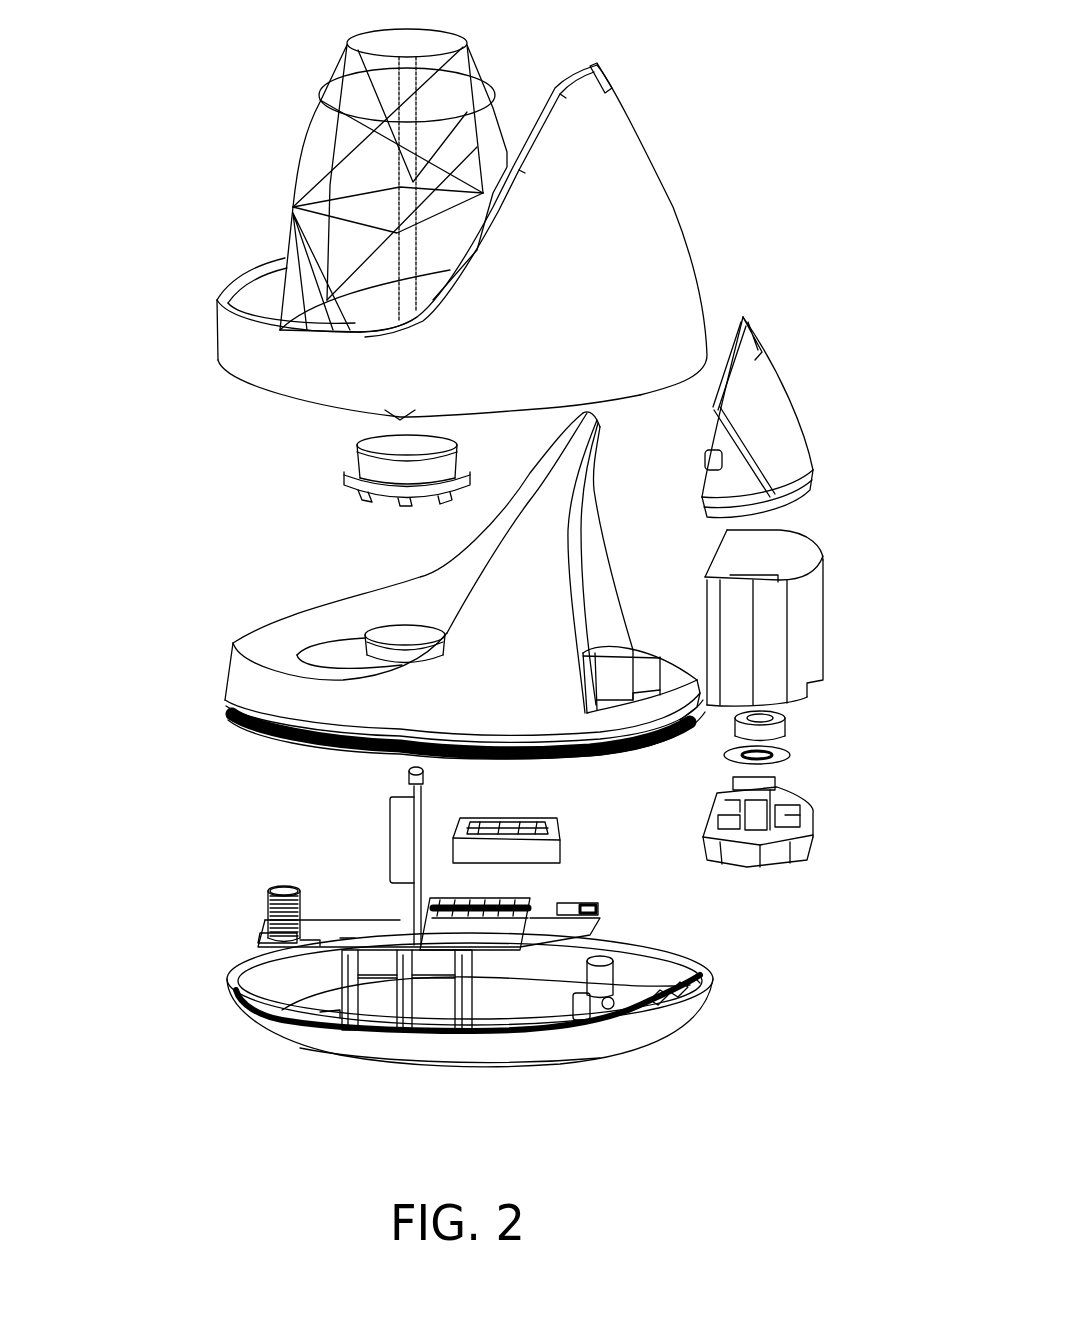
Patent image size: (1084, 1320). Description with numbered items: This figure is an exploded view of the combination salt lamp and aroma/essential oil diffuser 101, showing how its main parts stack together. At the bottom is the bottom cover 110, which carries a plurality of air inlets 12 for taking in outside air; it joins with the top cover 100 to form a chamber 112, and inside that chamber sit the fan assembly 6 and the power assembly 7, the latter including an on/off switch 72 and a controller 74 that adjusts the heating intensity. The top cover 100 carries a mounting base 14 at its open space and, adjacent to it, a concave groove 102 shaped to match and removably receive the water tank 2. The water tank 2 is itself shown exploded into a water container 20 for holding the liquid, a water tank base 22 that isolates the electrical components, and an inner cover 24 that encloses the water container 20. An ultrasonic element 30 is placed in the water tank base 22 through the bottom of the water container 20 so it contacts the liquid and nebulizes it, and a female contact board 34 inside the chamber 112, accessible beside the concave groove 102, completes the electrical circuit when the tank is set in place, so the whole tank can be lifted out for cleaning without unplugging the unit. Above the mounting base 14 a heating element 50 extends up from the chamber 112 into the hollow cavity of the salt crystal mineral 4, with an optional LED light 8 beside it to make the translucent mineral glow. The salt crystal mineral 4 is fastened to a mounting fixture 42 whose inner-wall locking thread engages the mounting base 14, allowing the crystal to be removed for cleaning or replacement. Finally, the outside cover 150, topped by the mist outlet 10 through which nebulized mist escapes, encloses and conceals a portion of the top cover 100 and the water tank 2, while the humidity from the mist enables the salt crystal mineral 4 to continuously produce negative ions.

The water tank 2 is at (910, 860).
The salt crystal mineral 4 is at (330, 124).
The fan assembly 6 is at (520, 850).
The power assembly 7 is at (268, 910).
The LED light 8 is at (410, 780).
The mist outlet 10 is at (622, 86).
The air inlets 12 is at (710, 980).
The mounting base 14 is at (357, 645).
The water container 20 is at (807, 657).
The water tank base 22 is at (817, 820).
The inner cover 24 is at (787, 430).
The ultrasonic element 30 is at (787, 727).
The female contact board 34 is at (598, 912).
The mounting fixture 42 is at (367, 463).
The heating element 50 is at (400, 825).
The on/off switch 72 is at (272, 890).
The controller 74 is at (268, 923).
The top cover 100 is at (255, 688).
The combination salt lamp and aroma/essential oil diffuser 101 is at (833, 91).
The concave groove 102 is at (632, 653).
The bottom cover 110 is at (640, 1032).
The chamber 112 is at (292, 990).
The outside cover 150 is at (657, 240).